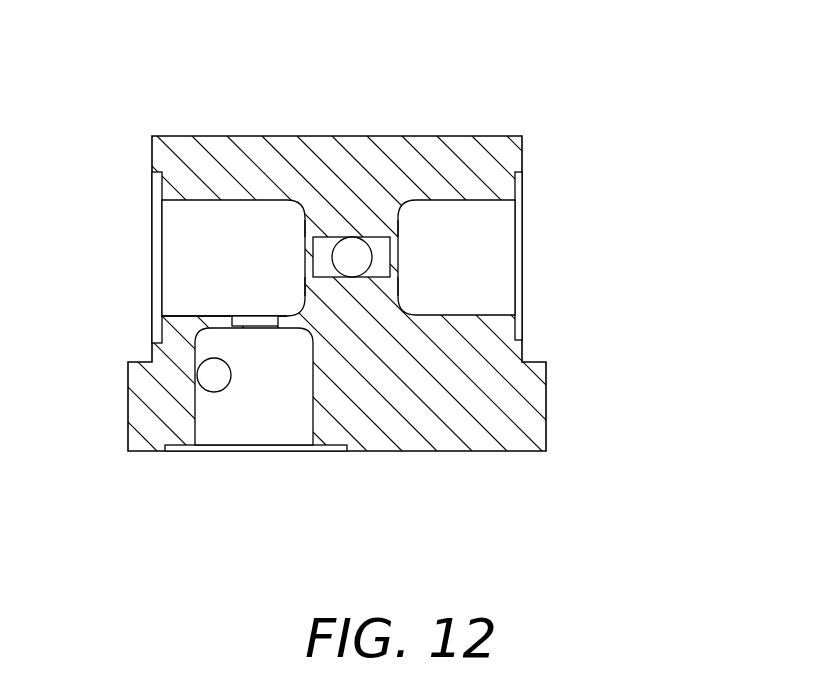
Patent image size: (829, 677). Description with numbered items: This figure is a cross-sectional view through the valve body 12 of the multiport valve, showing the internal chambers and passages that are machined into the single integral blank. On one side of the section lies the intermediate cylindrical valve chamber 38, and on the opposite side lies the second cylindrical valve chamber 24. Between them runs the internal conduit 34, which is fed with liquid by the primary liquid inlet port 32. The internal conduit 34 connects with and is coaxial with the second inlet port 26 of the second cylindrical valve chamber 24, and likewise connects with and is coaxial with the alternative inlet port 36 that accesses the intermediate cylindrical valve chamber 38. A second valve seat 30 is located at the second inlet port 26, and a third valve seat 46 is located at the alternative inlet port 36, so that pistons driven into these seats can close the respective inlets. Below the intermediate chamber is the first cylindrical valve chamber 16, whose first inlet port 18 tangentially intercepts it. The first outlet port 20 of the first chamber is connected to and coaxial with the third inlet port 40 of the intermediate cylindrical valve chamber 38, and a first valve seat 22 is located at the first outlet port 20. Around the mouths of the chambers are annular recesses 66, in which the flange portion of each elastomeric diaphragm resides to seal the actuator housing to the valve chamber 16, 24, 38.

The valve body 12 is at (642, 119).
The first cylindrical valve chamber 16 is at (287, 432).
The first inlet port 18 is at (222, 386).
The first outlet port 20 is at (250, 327).
The first valve seat 22 is at (231, 329).
The second cylindrical valve chamber 24 is at (500, 250).
The second inlet port 26 is at (397, 248).
The second valve seat 30 is at (402, 283).
The primary liquid inlet port 32 is at (342, 238).
The internal conduit 34 is at (377, 240).
The alternative inlet port 36 is at (307, 267).
The intermediate cylindrical valve chamber 38 is at (173, 250).
The third inlet port 40 is at (248, 316).
The third valve seat 46 is at (307, 248).
The annular recess 66 is at (162, 185).